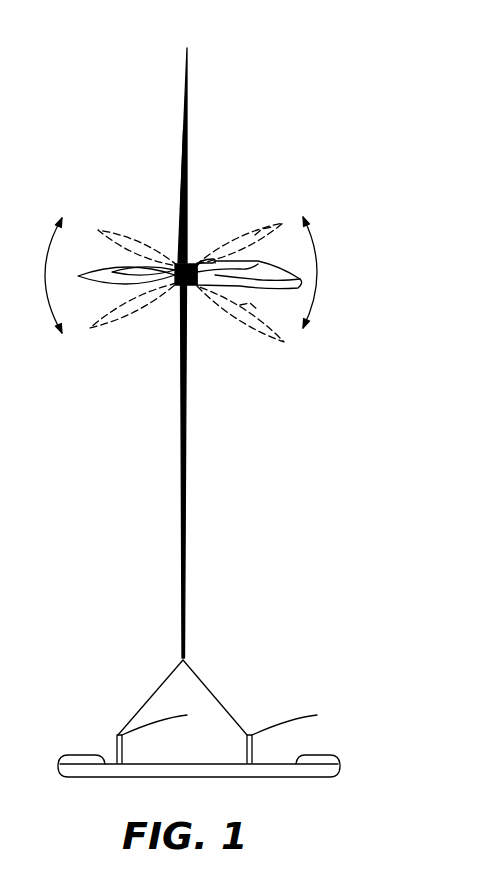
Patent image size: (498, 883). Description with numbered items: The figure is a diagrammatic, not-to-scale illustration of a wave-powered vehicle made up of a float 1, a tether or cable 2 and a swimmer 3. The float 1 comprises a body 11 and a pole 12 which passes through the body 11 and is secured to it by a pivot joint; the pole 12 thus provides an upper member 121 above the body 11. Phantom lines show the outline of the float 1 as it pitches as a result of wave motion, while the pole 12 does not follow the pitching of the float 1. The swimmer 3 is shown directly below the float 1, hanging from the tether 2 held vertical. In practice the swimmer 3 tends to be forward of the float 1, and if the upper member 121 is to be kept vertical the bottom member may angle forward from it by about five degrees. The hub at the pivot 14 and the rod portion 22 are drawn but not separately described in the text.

The float 1 is at (215, 291).
The body 11 is at (168, 287).
The pole 12 is at (188, 153).
The upper member 121 is at (178, 176).
The hub 14 is at (198, 288).
The tether 2 is at (202, 463).
The rod upper section 22 is at (180, 313).
The swimmer 3 is at (277, 702).